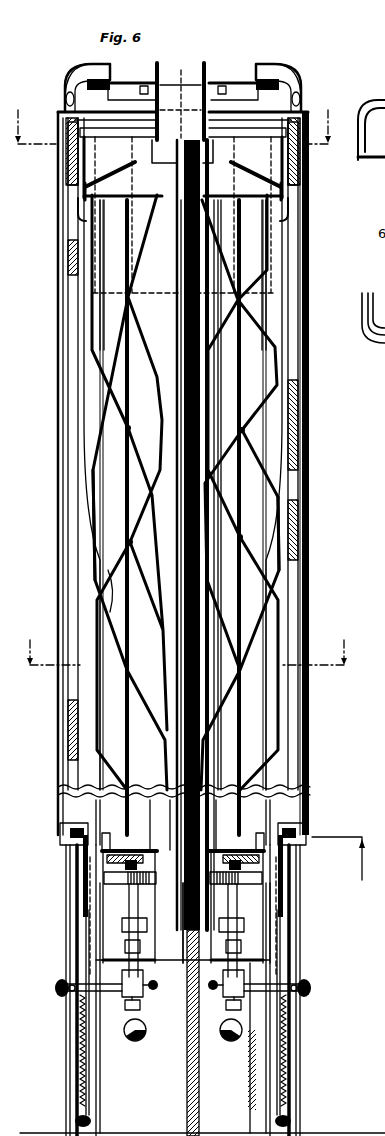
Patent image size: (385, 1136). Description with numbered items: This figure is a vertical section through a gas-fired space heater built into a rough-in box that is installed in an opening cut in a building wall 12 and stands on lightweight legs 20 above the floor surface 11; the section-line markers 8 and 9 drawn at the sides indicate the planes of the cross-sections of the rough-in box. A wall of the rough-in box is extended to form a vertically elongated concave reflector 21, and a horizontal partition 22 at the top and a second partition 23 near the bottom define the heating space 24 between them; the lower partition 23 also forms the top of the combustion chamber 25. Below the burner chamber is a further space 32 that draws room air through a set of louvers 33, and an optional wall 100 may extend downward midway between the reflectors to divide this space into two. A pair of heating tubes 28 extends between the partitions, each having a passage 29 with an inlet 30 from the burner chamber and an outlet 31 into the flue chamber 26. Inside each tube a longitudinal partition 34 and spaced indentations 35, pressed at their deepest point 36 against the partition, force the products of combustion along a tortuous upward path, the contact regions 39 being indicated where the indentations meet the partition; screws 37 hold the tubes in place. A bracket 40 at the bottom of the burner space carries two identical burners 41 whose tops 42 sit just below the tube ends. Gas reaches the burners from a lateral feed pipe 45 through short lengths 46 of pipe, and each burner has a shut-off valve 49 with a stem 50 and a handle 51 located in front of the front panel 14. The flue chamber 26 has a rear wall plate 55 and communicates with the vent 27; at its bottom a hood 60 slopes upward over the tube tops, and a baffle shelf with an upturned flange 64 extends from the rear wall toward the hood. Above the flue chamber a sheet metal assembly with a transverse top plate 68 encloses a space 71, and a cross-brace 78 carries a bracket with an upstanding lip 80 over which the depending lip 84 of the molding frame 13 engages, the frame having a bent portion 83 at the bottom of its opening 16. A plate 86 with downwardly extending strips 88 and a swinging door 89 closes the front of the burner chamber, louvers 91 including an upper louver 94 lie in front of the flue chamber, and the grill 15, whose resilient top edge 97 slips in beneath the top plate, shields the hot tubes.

The section line 8- 8 is at (172, 119).
The section line 9- 9 is at (186, 644).
The floor surface 11 is at (346, 1133).
The building wall 12 is at (343, 867).
The molding frame 13 is at (70, 70).
The front panel 14 is at (70, 902).
The grill 15 is at (60, 390).
The opening 16 is at (66, 98).
The legs 20 is at (252, 1100).
The concave reflector 21 is at (84, 413).
The partition 22 is at (72, 207).
The partition 23 is at (62, 830).
The heating space 24 is at (84, 461).
The combustion chamber 25 is at (284, 932).
The flue chamber 26 is at (94, 157).
The vent 27 is at (185, 63).
The heating tubes 28 is at (90, 528).
The passage 29 is at (108, 588).
The inlet 30 is at (143, 848).
The outlet 31 is at (134, 212).
The space 32 is at (110, 1061).
The louvers 33 is at (76, 1036).
The longitudinal partition 34 is at (134, 454).
The indentations 35 is at (186, 302).
The deepest point 36 is at (134, 540).
The screws 37 is at (108, 840).
The clamp 39 is at (127, 541).
The bracket 40 is at (150, 948).
The burners 41 is at (140, 906).
The burner tops 42 is at (118, 886).
The feed pipe 45 is at (140, 1041).
The short lengths of pipe 46 is at (141, 1010).
The shut-off valve 49 is at (155, 991).
The stem 50 is at (108, 992).
The handle 51 is at (55, 992).
The rear wall plate 55 is at (176, 170).
The hood 60 is at (104, 178).
The flange 64 is at (192, 174).
The transverse top plate 68 is at (200, 90).
The space 71 is at (180, 82).
The cross-brace 78 is at (118, 83).
The upstanding lip 80 is at (90, 64).
The horizontal bent portion 83 is at (75, 1120).
The depending lip 84 is at (102, 78).
The plate 86 is at (76, 940).
The strips 88 is at (98, 1084).
The door 89 is at (75, 872).
The louvers 91 is at (70, 181).
The upper louver 94 is at (80, 133).
The top edge 97 is at (58, 112).
The wall 100 is at (187, 1106).